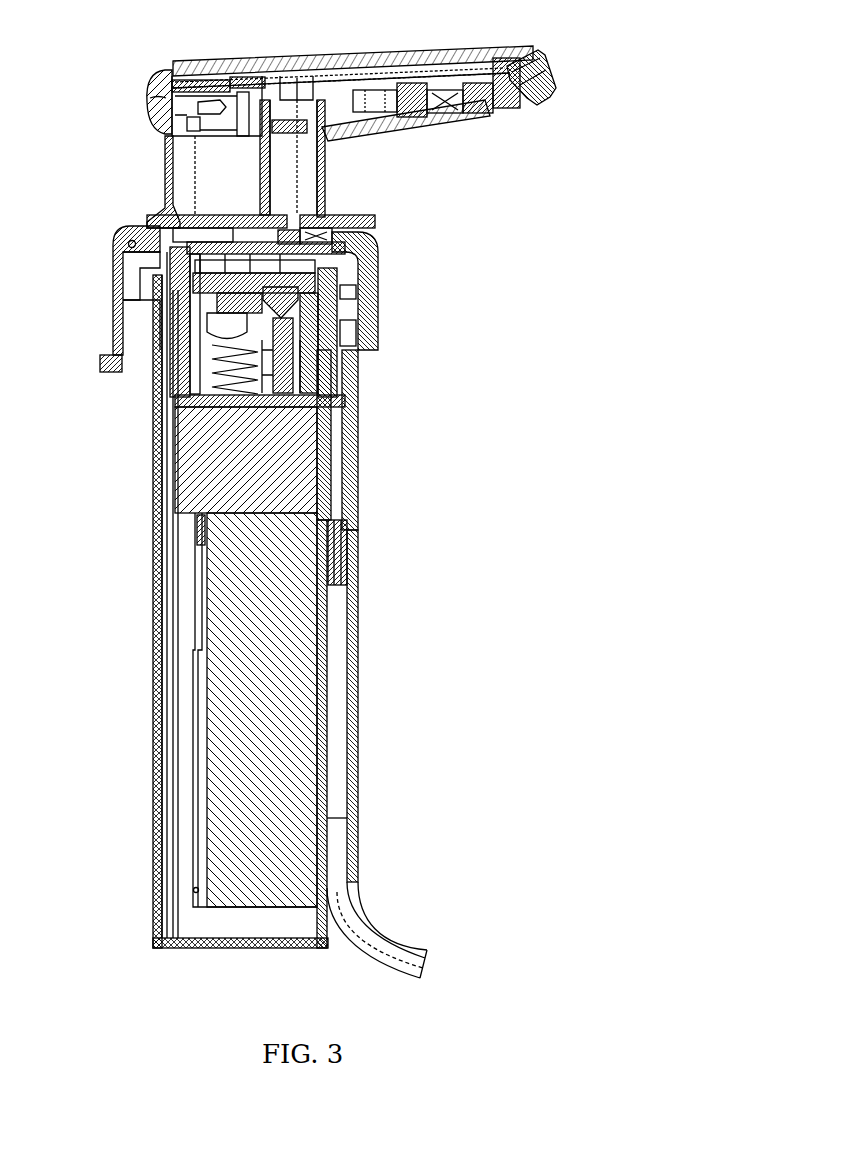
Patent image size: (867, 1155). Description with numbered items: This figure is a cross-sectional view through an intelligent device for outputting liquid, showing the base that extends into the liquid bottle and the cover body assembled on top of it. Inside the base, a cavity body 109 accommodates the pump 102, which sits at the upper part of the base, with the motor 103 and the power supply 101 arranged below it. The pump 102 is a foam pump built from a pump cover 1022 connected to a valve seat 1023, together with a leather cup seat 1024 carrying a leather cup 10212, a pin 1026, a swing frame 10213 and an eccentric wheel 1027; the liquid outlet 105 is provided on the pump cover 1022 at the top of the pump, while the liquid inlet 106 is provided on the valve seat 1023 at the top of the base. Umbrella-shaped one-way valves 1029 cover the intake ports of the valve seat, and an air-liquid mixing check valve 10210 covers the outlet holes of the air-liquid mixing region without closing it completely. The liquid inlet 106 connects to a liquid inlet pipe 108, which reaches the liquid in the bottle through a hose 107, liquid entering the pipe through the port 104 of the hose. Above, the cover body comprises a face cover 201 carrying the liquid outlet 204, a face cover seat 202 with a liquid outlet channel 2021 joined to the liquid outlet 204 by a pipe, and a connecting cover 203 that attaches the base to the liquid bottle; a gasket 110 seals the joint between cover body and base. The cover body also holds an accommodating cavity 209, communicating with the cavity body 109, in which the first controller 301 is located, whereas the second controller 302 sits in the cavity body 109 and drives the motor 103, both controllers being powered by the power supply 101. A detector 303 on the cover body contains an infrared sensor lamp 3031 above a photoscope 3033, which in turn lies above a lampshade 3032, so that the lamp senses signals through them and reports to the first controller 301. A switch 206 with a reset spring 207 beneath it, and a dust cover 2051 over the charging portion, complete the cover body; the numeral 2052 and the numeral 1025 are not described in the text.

The power supply 101 is at (283, 715).
The pump 102 is at (87, 368).
The motor 103 is at (255, 460).
The port of the hose 104 is at (418, 965).
The liquid outlet 105 is at (287, 237).
The liquid inlet 106 is at (337, 303).
The hose 107 is at (360, 737).
The liquid inlet pipe 108 is at (358, 537).
The cavity body 109 is at (185, 803).
The gasket 110 is at (303, 233).
The pump cover 1022 is at (160, 338).
The valve seat 1023 is at (157, 358).
The leather cup seat 1024 is at (155, 380).
The spring 1025 is at (193, 407).
The pin 1026 is at (177, 418).
The eccentric wheel 1027 is at (177, 437).
The one-way valve 1029 is at (337, 345).
The air-liquid mixing check valve 10210 is at (325, 358).
The leather cup 10212 is at (305, 380).
The swing frame 10213 is at (300, 400).
The face cover 201 is at (417, 55).
The face cover seat 202 is at (140, 223).
The connecting cover 203 is at (113, 280).
The liquid outlet 204 is at (533, 88).
The switch 206 is at (267, 42).
The spring 207 is at (247, 78).
The accommodating cavity 209 is at (198, 75).
The liquid outlet channel 2021 is at (296, 182).
The dust cover 2051 is at (147, 98).
The latch 2052 is at (171, 69).
The first controller 301 is at (217, 73).
The second controller 302 is at (193, 647).
The detector 303 is at (532, 130).
The infrared sensor lamp 3031 is at (463, 100).
The lampshade 3032 is at (453, 110).
The photoscope 3033 is at (430, 120).